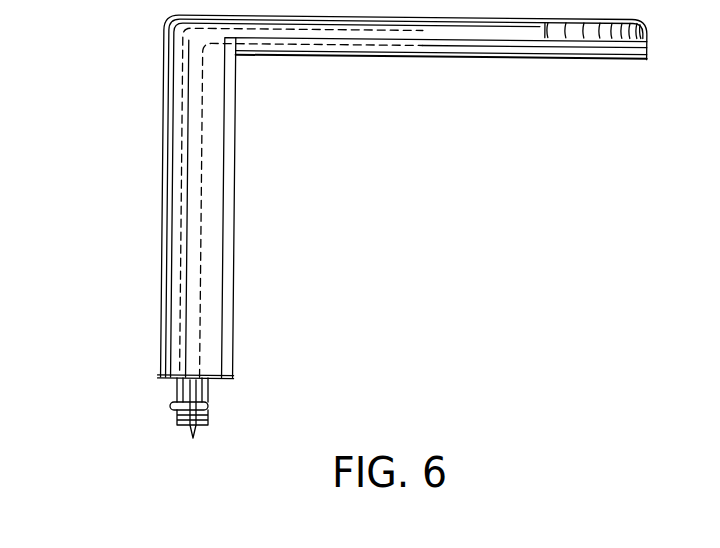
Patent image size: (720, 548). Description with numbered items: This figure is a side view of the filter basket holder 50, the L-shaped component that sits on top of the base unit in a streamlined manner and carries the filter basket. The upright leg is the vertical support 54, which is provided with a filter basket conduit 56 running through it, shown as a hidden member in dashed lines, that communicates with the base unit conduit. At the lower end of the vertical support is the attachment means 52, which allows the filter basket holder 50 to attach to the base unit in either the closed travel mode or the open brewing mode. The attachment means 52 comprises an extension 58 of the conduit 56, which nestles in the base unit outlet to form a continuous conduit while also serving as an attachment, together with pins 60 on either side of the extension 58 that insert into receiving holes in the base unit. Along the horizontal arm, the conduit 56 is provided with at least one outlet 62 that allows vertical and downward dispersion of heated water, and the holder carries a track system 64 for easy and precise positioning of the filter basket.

The filter basket holder 50 is at (150, 52).
The attachment means 52 is at (150, 405).
The vertical support 54 is at (175, 229).
The filter basket conduit 56 is at (205, 107).
The extension 58 is at (208, 405).
The pins 60 is at (195, 427).
The outlet 62 is at (423, 45).
The track system 64 is at (588, 47).